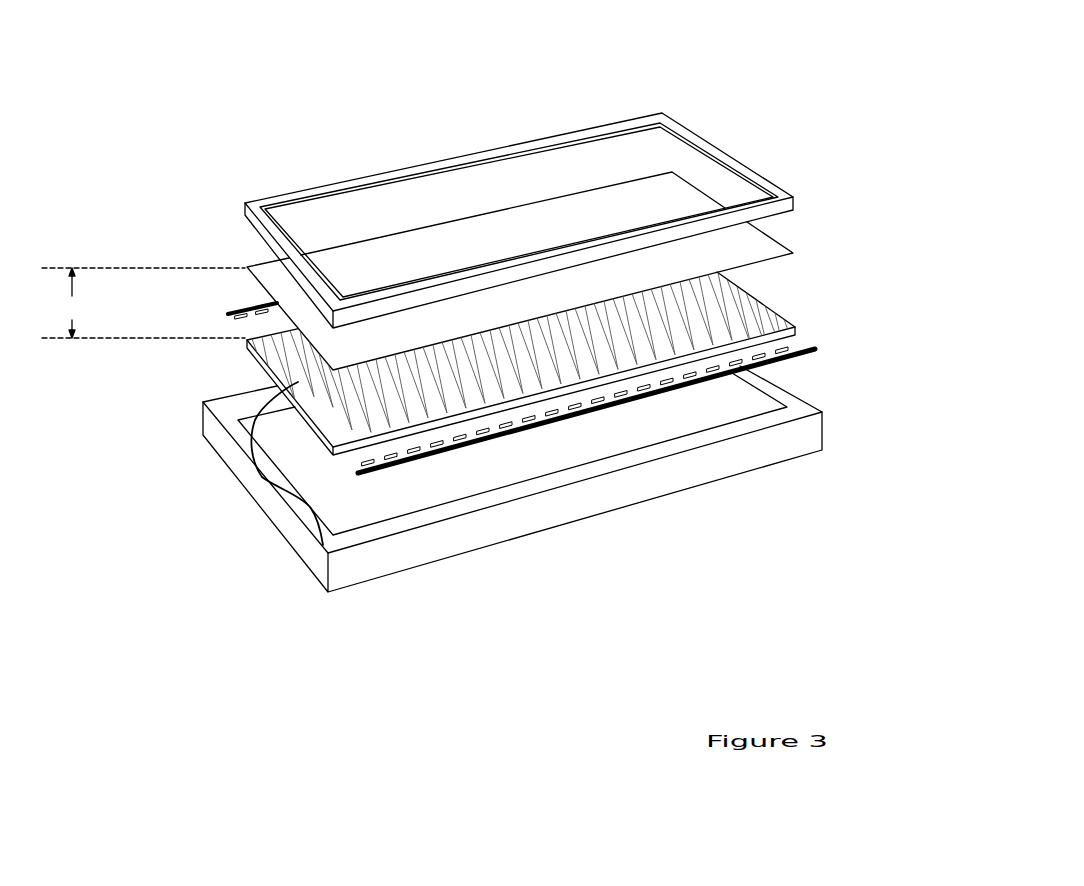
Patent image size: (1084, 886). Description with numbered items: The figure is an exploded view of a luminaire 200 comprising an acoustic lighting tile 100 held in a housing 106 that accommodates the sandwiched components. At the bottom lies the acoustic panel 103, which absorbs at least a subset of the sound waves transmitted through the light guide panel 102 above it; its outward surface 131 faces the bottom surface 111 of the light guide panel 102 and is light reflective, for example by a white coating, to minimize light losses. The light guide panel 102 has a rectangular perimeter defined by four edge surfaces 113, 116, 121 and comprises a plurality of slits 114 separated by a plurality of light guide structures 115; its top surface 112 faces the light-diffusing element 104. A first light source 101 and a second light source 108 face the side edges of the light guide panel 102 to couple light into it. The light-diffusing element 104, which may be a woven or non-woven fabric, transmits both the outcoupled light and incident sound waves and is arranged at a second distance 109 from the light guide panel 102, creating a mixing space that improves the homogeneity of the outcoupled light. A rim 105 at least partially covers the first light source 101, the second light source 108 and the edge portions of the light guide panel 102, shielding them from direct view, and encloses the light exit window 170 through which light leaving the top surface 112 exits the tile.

The luminaire 200 is at (822, 68).
The acoustic lighting tile 100 is at (821, 195).
The light exit window 170 is at (538, 177).
The rim 105 is at (297, 193).
The light-diffusing element 104 is at (275, 277).
The second light source 108 is at (231, 314).
The edge surface 116 is at (244, 338).
The second distance 109 is at (143, 303).
The housing 106 is at (220, 447).
The light guide panel 102 is at (780, 318).
The top surface 112 is at (745, 302).
The edge surface 121 is at (765, 316).
The slits 114 is at (300, 382).
The light guide structures 115 is at (322, 400).
The first light source 101 is at (817, 350).
The acoustic panel 103 is at (753, 407).
The outward surface 131 is at (585, 445).
The bottom surface 111 is at (378, 443).
The edge surface 113 is at (294, 527).